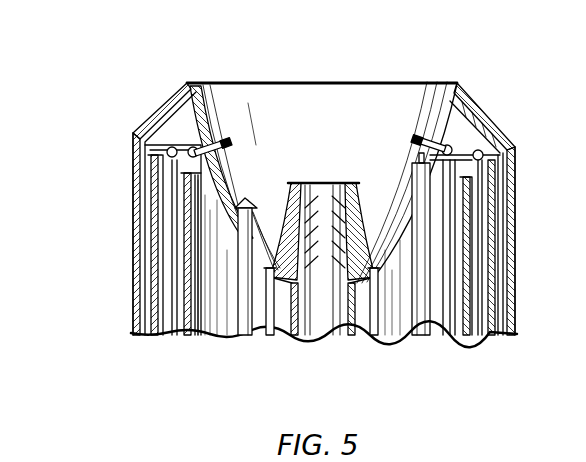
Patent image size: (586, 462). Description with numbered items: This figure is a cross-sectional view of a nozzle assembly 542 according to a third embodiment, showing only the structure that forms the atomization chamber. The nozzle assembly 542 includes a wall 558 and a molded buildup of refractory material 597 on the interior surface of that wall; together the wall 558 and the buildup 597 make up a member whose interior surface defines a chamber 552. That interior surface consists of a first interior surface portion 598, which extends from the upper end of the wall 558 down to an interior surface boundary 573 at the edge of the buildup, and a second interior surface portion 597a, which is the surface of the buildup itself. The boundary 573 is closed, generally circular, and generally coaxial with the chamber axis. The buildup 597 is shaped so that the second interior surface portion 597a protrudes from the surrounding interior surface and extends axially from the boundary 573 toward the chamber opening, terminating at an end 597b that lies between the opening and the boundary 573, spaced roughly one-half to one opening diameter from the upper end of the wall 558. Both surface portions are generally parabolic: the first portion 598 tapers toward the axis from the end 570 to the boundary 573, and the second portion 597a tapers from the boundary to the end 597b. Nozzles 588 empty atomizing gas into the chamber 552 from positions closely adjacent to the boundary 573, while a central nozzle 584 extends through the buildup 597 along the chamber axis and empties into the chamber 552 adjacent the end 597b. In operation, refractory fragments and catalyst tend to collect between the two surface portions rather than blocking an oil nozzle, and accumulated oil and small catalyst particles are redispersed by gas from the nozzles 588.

The nozzle assembly 542 is at (105, 213).
The chamber 552 is at (331, 105).
The wall 558 is at (182, 120).
The end 570 is at (188, 84).
The interior surface boundary 573 is at (280, 276).
The central nozzle 584 is at (290, 330).
The nozzles 588 is at (385, 316).
The molded buildup of refractory material 597 is at (360, 210).
The second interior surface portion 597a is at (273, 212).
The end 597b is at (357, 181).
The first interior surface portion 598 is at (224, 172).